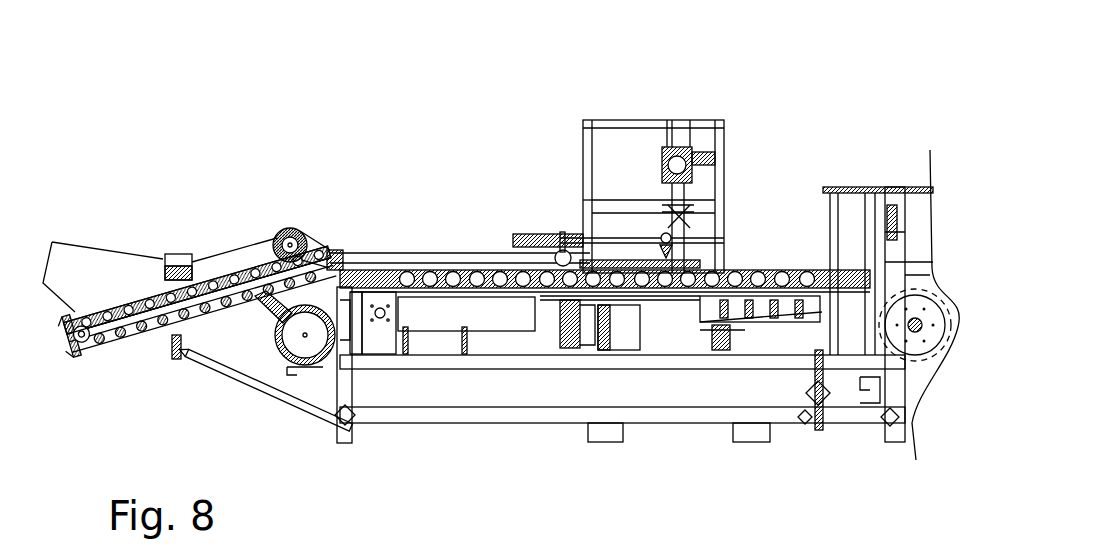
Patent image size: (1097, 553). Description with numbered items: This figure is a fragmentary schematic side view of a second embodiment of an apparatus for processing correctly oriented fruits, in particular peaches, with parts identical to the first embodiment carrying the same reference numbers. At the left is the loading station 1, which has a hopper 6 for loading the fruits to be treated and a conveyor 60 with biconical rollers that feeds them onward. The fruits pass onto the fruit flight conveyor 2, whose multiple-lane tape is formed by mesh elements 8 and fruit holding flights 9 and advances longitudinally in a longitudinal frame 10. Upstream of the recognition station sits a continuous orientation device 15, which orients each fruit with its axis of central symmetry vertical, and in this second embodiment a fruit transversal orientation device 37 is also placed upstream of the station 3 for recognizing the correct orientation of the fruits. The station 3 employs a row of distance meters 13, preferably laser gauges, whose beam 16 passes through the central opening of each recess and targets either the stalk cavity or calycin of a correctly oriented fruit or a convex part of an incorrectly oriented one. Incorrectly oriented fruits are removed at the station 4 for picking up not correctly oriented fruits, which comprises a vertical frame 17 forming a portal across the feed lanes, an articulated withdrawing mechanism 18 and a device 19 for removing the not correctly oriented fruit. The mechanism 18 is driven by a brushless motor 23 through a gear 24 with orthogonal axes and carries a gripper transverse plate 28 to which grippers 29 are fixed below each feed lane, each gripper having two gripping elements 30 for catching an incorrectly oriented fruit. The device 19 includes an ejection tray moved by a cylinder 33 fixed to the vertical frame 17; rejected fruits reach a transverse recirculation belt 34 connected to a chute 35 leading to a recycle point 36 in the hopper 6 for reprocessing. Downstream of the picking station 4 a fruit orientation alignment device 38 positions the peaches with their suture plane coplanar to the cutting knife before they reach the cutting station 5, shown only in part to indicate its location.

The loading station 1 is at (137, 352).
The fruit flight conveyor 2 is at (277, 353).
The station for recognizing the correct orientation of the fruits 3 is at (600, 345).
The station for picking up not correctly oriented fruits 4 is at (705, 95).
The cutting station 5 is at (880, 185).
The hopper 6 is at (72, 242).
The mesh elements 8 is at (317, 370).
The fruit holding flights 9 is at (372, 362).
The longitudinal frame 10 is at (780, 428).
The distance meters 13 is at (632, 350).
The continuous orientation device 15 is at (447, 332).
The beam 16 is at (652, 345).
The vertical frame 17 is at (727, 125).
The articulated withdrawing mechanism 18 is at (658, 180).
The device for removing the not correctly oriented fruit 19 is at (545, 197).
The brushless motor 23 is at (702, 160).
The gear with orthogonal axes 24 is at (667, 147).
The gripper transverse plate 28 is at (700, 210).
The gripper 29 is at (698, 214).
The gripping elements 30 is at (700, 225).
The cylinder 33 is at (566, 234).
The transverse recirculation belt 34 is at (538, 236).
The chute 35 is at (430, 262).
The recycle point 36 is at (176, 254).
The fruit transversal orientation device 37 is at (588, 322).
The fruit orientation alignment device 38 is at (762, 320).
The conveyor with biconical rollers 60 is at (126, 348).